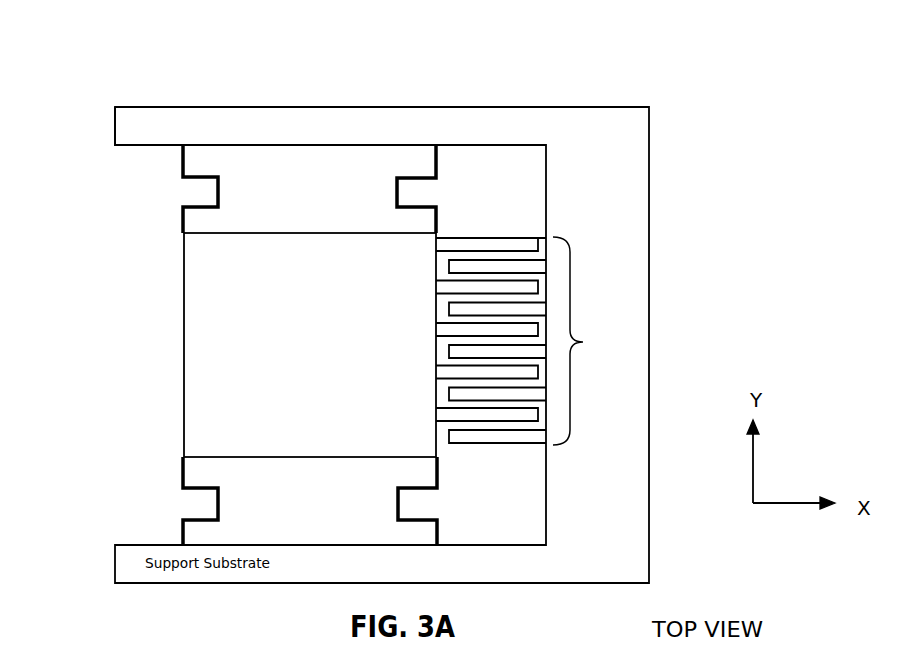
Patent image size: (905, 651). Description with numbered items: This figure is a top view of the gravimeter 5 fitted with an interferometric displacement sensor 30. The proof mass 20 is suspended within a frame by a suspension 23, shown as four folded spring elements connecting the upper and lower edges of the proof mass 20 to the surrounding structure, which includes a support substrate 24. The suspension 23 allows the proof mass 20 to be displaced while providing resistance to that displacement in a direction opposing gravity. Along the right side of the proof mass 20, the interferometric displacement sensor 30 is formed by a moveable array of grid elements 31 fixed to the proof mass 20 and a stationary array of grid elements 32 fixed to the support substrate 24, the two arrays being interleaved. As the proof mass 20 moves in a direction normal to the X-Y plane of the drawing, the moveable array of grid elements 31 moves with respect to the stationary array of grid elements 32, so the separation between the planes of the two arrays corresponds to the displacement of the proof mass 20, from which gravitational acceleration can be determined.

The gravimeter 5 is at (503, 71).
The proof mass 20 is at (235, 348).
The suspension 23 is at (183, 177).
The support substrate 24 is at (147, 127).
The interferometric displacement sensor 30 is at (551, 341).
The moveable array of grid elements 31 is at (442, 330).
The stationary array of grid elements 32 is at (539, 309).